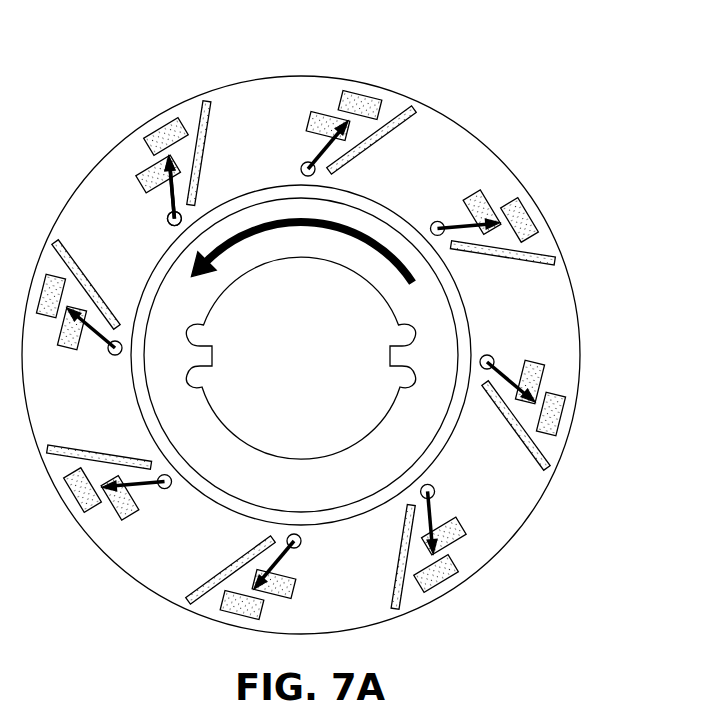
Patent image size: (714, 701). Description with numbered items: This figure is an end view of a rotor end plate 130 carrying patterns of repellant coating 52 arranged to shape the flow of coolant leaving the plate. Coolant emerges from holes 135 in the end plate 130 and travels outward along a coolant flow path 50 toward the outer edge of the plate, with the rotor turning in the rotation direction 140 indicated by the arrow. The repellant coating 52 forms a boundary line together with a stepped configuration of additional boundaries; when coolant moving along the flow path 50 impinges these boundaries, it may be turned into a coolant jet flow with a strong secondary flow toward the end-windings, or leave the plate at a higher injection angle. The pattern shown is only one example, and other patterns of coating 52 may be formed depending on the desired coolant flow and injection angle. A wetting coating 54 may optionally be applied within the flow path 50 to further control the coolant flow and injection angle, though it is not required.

The rotor end plate 130 is at (520, 70).
The rotation direction 140 is at (298, 228).
The repellant coating 52 is at (200, 118).
The holes 135 is at (300, 172).
The coolant flow path 50 is at (172, 206).
The wetting coating 54 is at (172, 192).